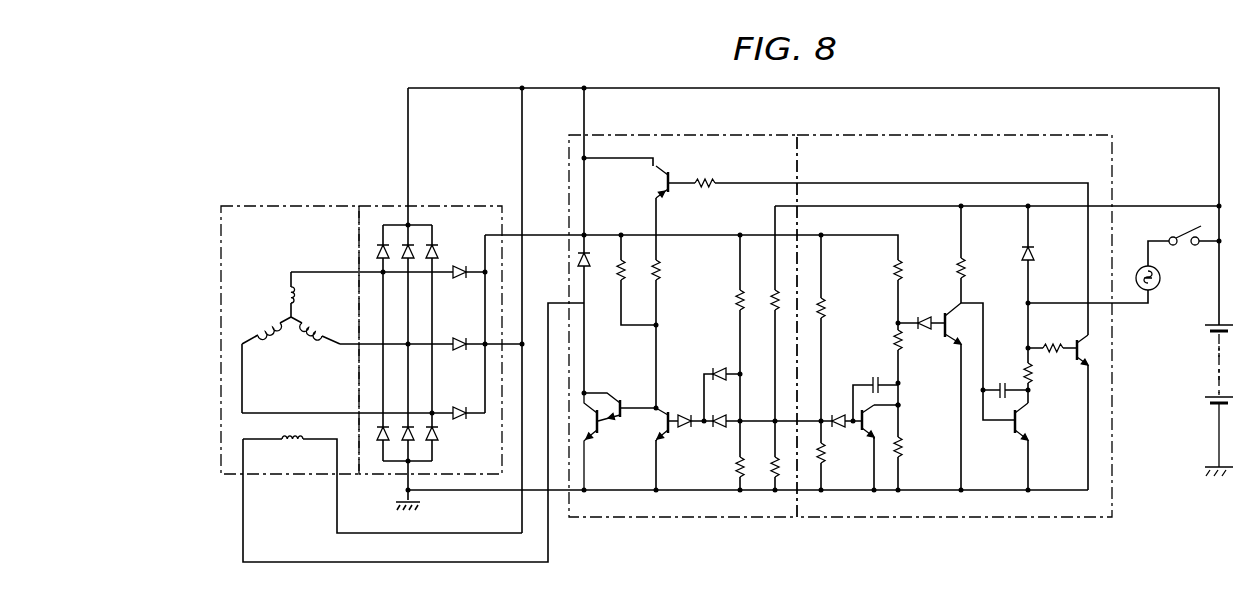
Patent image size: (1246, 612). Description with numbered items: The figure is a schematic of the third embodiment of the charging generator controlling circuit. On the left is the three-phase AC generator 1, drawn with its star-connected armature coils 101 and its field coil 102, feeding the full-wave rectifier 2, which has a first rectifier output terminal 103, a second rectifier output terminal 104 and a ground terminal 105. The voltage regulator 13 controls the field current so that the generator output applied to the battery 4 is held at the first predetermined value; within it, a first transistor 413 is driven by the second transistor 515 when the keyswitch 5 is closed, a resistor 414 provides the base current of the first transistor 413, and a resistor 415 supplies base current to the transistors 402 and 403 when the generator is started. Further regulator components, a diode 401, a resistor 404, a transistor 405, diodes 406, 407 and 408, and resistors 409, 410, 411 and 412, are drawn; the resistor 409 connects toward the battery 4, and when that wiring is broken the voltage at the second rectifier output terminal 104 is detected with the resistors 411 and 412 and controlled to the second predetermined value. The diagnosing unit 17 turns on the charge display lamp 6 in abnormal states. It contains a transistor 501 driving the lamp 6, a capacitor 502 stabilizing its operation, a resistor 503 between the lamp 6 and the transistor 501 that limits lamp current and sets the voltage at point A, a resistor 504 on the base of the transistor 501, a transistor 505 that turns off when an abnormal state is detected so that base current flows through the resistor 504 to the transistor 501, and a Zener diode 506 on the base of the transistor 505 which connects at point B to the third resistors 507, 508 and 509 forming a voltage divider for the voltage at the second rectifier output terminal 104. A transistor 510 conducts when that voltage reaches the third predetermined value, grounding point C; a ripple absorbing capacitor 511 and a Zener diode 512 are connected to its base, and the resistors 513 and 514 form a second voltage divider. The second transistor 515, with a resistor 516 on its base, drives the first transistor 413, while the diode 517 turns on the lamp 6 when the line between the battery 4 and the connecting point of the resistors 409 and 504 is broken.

The three-phase AC generator 1 is at (282, 208).
The full-wave rectifier 2 is at (425, 208).
The battery 4 is at (1205, 363).
The keyswitch 5 is at (1180, 230).
The charge display lamp 6 is at (1162, 277).
The voltage regulator 13 is at (694, 129).
The diagnosing unit 17 is at (1012, 143).
The armature coil 101 is at (270, 318).
The field coil 102 is at (283, 441).
The first rectifier output terminal 103 is at (435, 236).
The second rectifier output terminal 104 is at (483, 333).
The ground terminal 105 is at (437, 450).
The diode 401 is at (577, 259).
The transistor 402 is at (590, 437).
The transistor 403 is at (612, 395).
The resistor 404 is at (606, 272).
The transistor 405 is at (653, 418).
The diode 406 is at (688, 414).
The diode 407 is at (717, 370).
The diode 408 is at (720, 430).
The resistor 409 is at (768, 293).
The resistor 410 is at (765, 463).
The resistor 411 is at (735, 302).
The resistor 412 is at (727, 465).
The first transistor 413 is at (657, 183).
The resistor 414 is at (705, 178).
The resistor 415 is at (660, 281).
The transistor 501 is at (1030, 422).
The capacitor 502 is at (1004, 382).
The resistor 503 is at (1034, 370).
The resistor 504 is at (953, 265).
The transistor 505 is at (953, 323).
The Zener diode 506 is at (925, 315).
The third resistor 507 is at (892, 272).
The third resistor 508 is at (887, 348).
The third resistor 509 is at (907, 445).
The transistor 510 is at (877, 418).
The ripple absorbing capacitor 511 is at (880, 395).
The Zener diode 512 is at (846, 428).
The resistor 513 is at (828, 304).
The resistor 514 is at (824, 462).
The second transistor 515 is at (1092, 344).
The resistor 516 is at (1053, 342).
The diode 517 is at (1038, 249).
The point A is at (1027, 303).
The node B is at (895, 325).
The point C is at (900, 405).